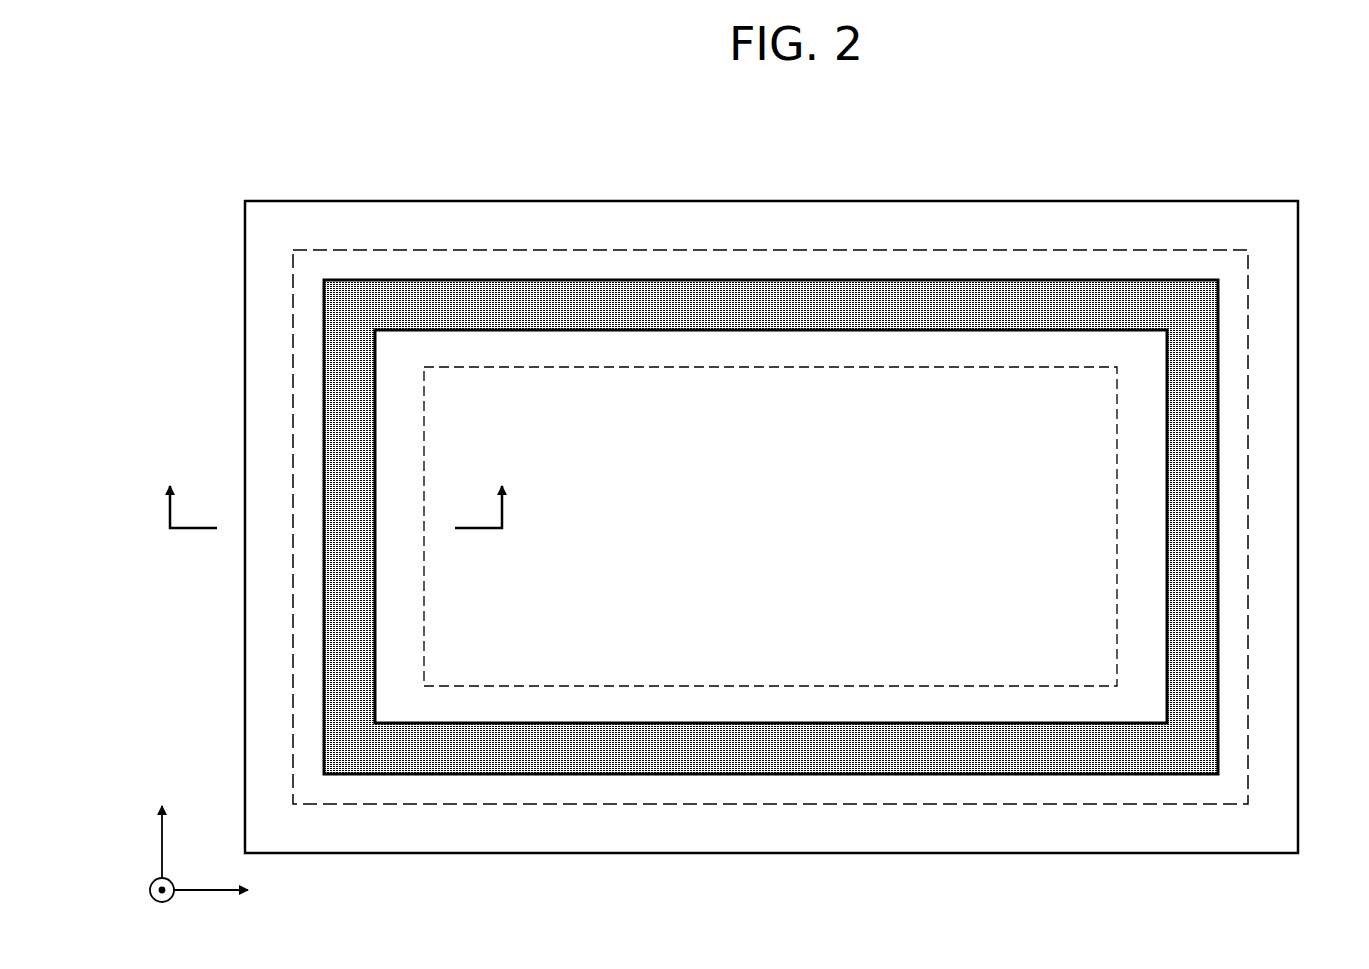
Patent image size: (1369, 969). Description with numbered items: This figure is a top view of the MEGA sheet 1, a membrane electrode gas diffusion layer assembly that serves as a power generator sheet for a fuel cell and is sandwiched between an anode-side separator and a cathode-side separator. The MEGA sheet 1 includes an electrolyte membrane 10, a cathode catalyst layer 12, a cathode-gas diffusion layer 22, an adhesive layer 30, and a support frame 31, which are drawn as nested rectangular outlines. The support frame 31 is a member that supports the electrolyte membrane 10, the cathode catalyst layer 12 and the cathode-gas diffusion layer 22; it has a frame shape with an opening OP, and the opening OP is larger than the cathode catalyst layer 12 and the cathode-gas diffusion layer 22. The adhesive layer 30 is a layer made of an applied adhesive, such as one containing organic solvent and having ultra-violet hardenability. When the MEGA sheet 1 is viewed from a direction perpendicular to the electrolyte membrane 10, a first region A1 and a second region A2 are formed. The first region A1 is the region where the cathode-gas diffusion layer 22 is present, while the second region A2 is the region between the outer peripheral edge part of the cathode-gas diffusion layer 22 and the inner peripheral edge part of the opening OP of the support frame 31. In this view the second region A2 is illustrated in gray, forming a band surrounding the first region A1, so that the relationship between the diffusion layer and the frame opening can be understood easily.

The MEGA sheet 1 is at (1319, 126).
The electrolyte membrane 10 is at (510, 250).
The cathode catalyst layer 12 is at (775, 396).
The cathode-gas diffusion layer 22 is at (770, 396).
The first region A1 is at (830, 352).
The adhesive layer 30 is at (771, 440).
The second region A2 is at (740, 305).
The support frame 31 is at (970, 230).
The opening OP is at (325, 437).